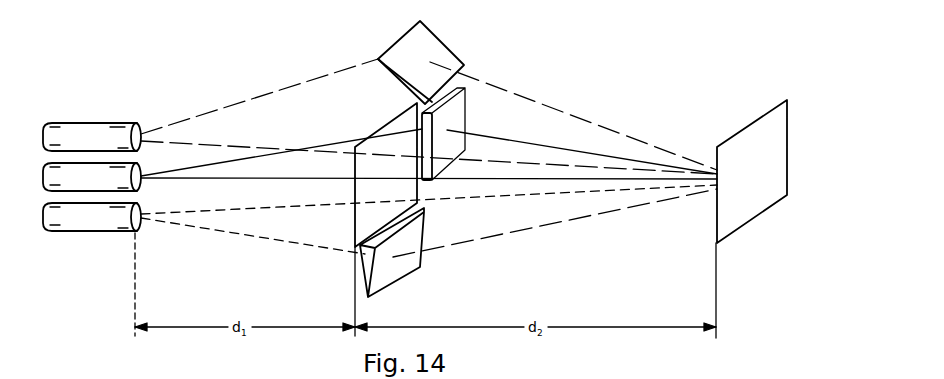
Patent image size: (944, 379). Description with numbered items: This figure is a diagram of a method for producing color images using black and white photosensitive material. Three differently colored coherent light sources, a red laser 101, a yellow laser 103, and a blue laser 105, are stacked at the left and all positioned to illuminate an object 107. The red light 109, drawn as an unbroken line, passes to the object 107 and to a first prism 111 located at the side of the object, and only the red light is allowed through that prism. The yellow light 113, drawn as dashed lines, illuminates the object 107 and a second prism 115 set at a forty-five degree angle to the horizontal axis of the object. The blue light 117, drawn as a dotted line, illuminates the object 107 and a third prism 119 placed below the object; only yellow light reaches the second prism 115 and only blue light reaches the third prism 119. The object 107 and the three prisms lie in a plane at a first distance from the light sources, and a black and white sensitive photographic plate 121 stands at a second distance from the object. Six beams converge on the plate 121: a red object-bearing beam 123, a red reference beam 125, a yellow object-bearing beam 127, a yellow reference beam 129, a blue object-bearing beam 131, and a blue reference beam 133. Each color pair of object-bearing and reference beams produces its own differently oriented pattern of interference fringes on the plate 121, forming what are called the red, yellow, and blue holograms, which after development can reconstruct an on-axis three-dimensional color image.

The red laser 101 is at (58, 162).
The yellow laser 103 is at (101, 122).
The blue laser 105 is at (104, 232).
The object 107 is at (354, 194).
The red light 109 is at (229, 163).
The first prism 111 is at (467, 97).
The yellow light 113 is at (288, 96).
The second prism 115 is at (453, 60).
The blue light 117 is at (279, 207).
The third prism 119 is at (383, 285).
The black and white sensitive photographic plate 121 is at (778, 147).
The red object-bearing beam 123 is at (443, 182).
The red reference beam 125 is at (615, 145).
The yellow object-bearing beam 127 is at (662, 171).
The yellow reference beam 129 is at (500, 87).
The blue object-bearing beam 131 is at (441, 203).
The blue reference beam 133 is at (652, 204).